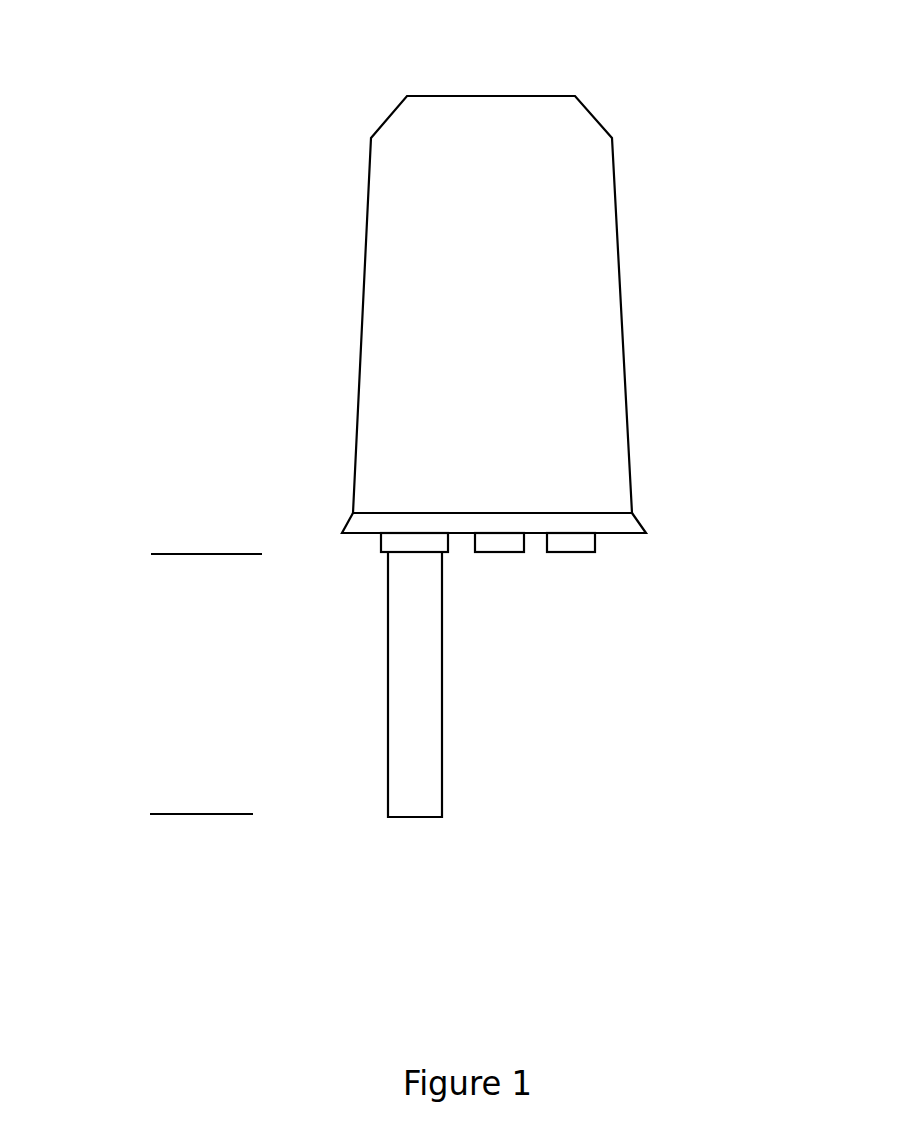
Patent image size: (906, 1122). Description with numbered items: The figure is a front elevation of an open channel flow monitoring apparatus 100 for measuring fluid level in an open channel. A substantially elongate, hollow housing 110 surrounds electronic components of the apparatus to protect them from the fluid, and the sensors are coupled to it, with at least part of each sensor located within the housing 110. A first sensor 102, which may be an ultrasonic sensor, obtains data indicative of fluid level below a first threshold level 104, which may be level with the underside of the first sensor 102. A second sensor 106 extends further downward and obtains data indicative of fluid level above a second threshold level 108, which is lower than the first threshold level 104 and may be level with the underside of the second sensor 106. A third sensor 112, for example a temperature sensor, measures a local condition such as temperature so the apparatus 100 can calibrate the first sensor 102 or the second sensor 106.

The open channel flow monitoring apparatus 100 is at (157, 117).
The first sensor 102 is at (597, 543).
The first threshold level 104 is at (183, 554).
The second sensor 106 is at (442, 743).
The second threshold level 108 is at (193, 814).
The housing 110 is at (619, 277).
The third sensor 112 is at (505, 552).